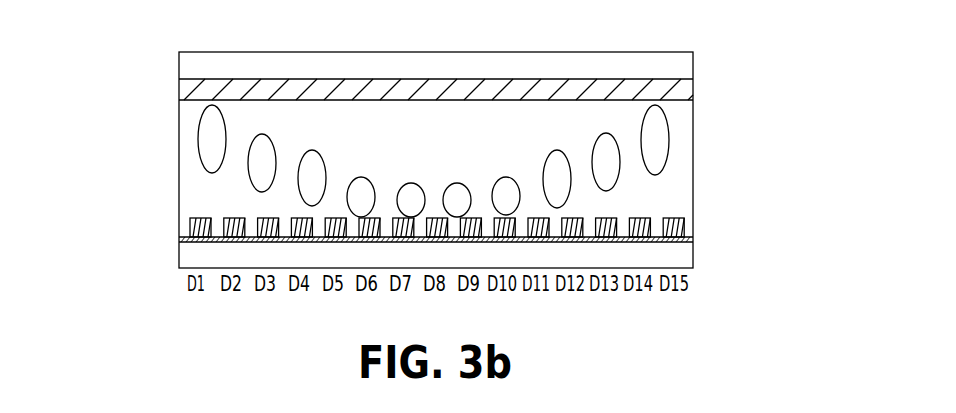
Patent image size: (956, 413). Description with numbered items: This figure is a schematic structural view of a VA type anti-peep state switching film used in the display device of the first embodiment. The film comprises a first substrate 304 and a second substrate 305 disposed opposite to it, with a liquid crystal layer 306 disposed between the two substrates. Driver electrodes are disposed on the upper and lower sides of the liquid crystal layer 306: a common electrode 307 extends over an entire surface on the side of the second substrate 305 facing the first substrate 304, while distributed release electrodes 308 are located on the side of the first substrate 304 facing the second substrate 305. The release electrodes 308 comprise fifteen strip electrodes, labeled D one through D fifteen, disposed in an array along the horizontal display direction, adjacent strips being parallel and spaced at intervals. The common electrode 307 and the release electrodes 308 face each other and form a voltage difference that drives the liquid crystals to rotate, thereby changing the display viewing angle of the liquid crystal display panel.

The first substrate 304 is at (693, 255).
The second substrate 305 is at (693, 66).
The liquid crystal layer 306 is at (187, 160).
The common electrode 307 is at (179, 79).
The release electrodes 308 is at (190, 232).